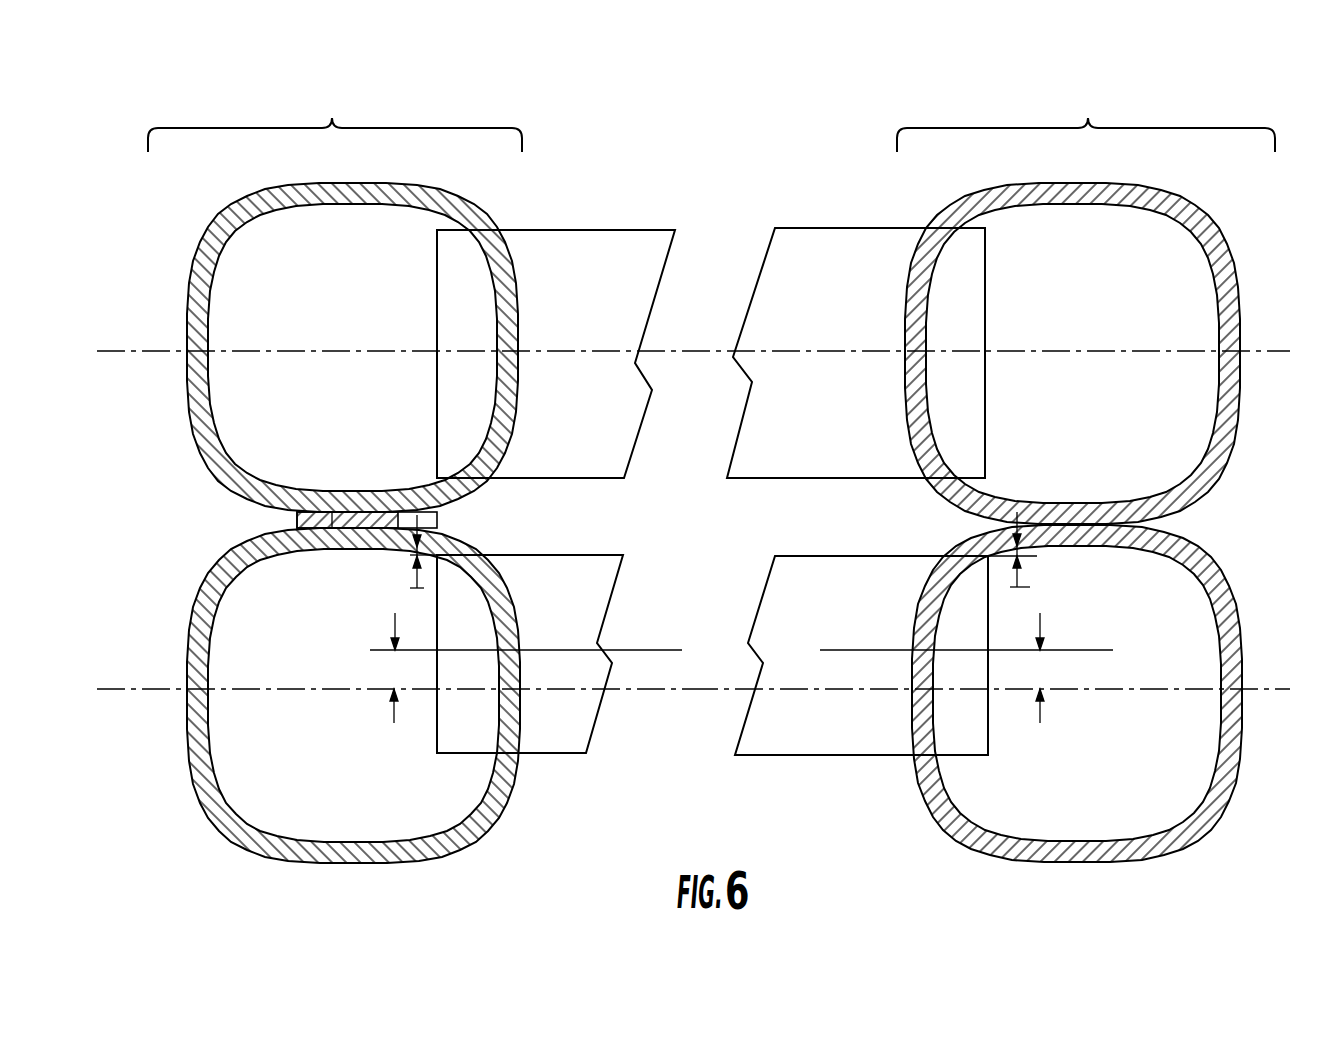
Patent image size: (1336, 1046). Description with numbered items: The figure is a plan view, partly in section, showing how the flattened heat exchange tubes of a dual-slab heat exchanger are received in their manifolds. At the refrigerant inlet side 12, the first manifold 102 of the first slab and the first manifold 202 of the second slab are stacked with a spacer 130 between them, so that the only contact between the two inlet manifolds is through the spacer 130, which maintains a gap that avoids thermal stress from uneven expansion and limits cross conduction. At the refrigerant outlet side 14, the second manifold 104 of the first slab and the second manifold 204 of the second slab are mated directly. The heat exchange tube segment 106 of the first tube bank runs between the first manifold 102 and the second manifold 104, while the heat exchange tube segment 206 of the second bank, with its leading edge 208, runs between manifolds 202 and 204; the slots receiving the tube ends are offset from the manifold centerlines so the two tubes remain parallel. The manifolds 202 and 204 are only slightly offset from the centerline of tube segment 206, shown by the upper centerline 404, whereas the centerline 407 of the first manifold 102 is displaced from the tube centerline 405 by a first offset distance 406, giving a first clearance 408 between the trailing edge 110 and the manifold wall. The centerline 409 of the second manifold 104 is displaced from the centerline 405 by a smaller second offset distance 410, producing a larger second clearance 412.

The refrigerant inlet side 12 is at (335, 117).
The refrigerant outlet side 14 is at (1086, 117).
The first manifold 102 is at (207, 606).
The second manifold 104 is at (1214, 574).
The heat exchange tube segment 106 is at (555, 767).
The trailing edge 110 is at (555, 555).
The spacer 130 is at (297, 519).
The first manifold 202 is at (258, 200).
The second manifold 204 is at (1224, 262).
The heat exchange tube segment 206 is at (589, 224).
The leading edge 208 is at (541, 482).
The upper centerline 404 is at (862, 345).
The centerline of the flattened tube segment 405 is at (858, 650).
The first offset distance 406 is at (395, 622).
The centerline of the first manifold 407 is at (303, 688).
The first clearance 408 is at (417, 587).
The centerline of the second manifold 409 is at (1157, 690).
The second offset distance 410 is at (1043, 622).
The second clearance 412 is at (1020, 584).